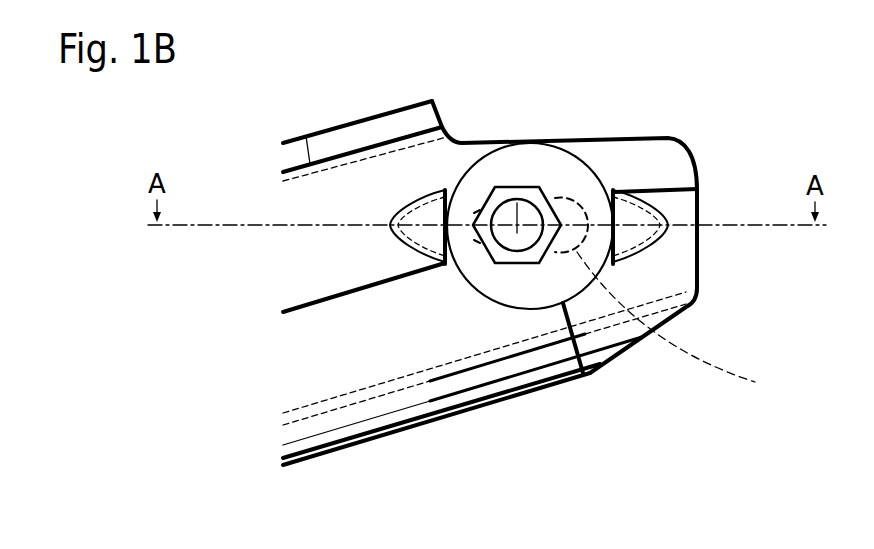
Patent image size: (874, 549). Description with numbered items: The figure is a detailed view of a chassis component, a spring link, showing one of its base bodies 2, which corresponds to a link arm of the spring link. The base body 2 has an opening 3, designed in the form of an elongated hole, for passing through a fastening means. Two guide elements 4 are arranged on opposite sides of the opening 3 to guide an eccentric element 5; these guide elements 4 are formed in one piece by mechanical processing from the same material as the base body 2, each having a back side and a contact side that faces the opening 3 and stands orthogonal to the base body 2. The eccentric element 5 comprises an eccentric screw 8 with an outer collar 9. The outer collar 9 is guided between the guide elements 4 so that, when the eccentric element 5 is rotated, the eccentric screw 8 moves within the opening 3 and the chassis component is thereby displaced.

The base body 2 is at (322, 360).
The opening 3 is at (677, 326).
The guide element 4 is at (390, 240).
The eccentric element 5 is at (480, 303).
The eccentric screw 8 is at (517, 203).
The outer collar 9 is at (547, 287).